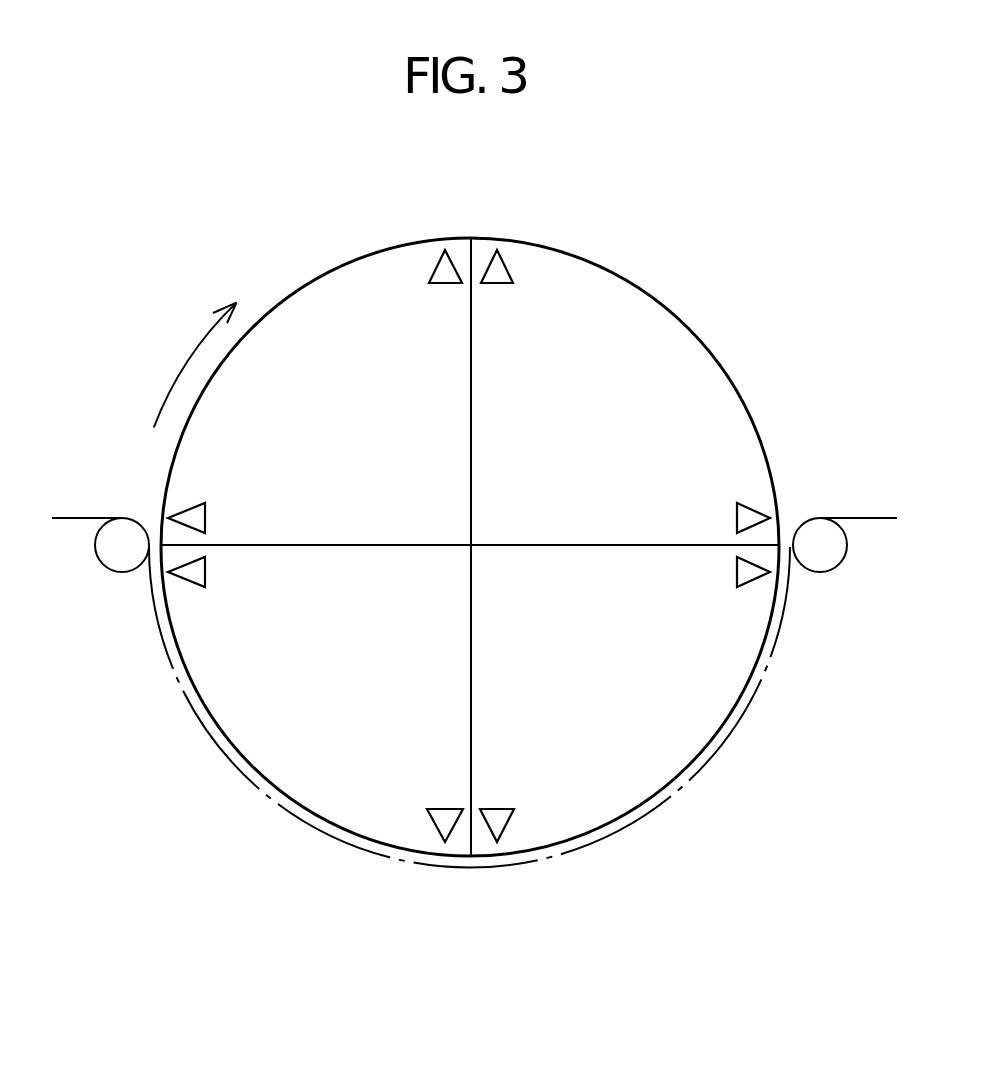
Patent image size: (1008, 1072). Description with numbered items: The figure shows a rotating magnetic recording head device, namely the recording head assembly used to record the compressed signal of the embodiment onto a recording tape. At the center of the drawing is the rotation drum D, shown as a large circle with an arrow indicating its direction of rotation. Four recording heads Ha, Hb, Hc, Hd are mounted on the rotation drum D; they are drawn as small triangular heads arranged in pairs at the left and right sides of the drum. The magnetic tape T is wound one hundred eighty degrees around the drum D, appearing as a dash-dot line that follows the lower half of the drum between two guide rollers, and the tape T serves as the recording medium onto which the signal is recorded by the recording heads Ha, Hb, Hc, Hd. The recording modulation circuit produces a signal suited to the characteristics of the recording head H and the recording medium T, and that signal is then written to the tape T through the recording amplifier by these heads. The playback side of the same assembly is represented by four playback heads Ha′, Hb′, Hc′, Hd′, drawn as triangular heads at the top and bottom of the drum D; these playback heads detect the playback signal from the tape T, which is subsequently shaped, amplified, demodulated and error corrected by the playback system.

The rotation drum D is at (602, 265).
The tape T is at (378, 857).
The recording head H is at (783, 475).
The recording head Ha is at (207, 520).
The recording head Hb is at (207, 572).
The recording head Hc is at (735, 572).
The recording head Hd is at (735, 520).
The playback head Ha′ is at (447, 808).
The playback head Hb′ is at (493, 808).
The playback head Hc′ is at (497, 286).
The playback head Hd′ is at (443, 286).